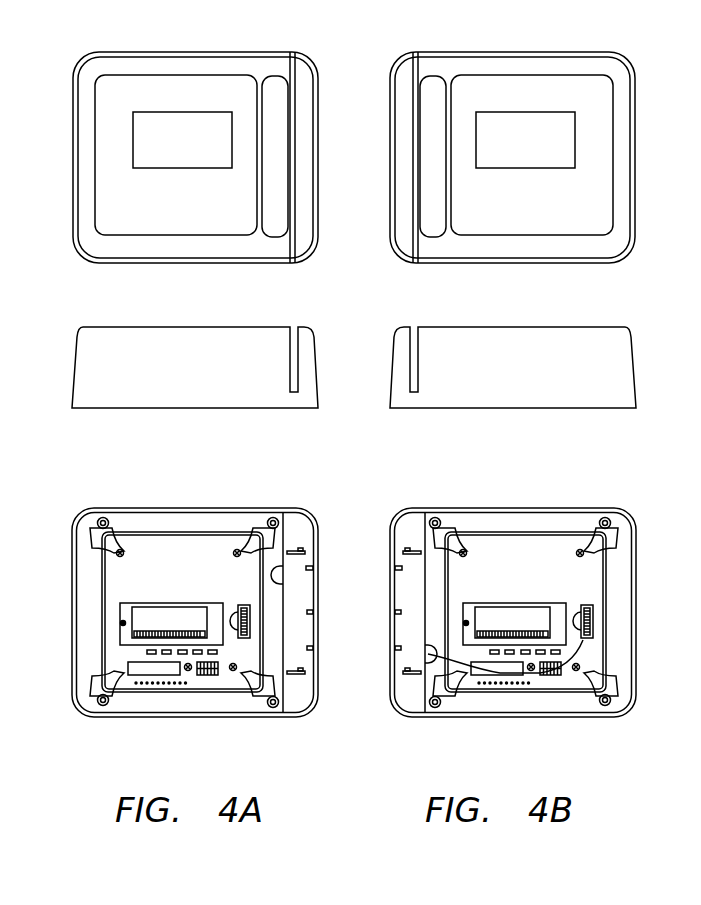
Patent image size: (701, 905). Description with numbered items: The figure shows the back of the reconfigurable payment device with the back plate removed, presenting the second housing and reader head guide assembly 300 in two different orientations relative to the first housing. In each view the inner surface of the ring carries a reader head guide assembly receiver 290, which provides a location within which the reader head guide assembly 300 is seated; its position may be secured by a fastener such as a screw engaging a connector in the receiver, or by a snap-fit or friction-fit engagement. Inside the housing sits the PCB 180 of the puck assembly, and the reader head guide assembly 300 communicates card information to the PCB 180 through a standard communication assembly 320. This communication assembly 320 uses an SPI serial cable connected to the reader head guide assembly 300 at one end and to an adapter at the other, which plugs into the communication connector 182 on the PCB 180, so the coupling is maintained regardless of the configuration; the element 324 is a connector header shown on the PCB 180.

In FIG. 4A, the PCB 180 is at (167, 572).
In FIG. 4B, the PCB 180 is at (527, 562).
In FIG. 4A, the communication connector 182 is at (227, 685).
In FIG. 4B, the communication connector 182 is at (597, 617).
In FIG. 4A, the reader head guide assembly receiver 290 is at (303, 517).
In FIG. 4B, the reader head guide assembly receiver 290 is at (407, 518).
In FIG. 4A, the reader head guide assembly 300 is at (300, 601).
In FIG. 4B, the reader head guide assembly 300 is at (400, 589).
In FIG. 4A, the communication assembly 320 is at (279, 575).
In FIG. 4B, the communication assembly 320 is at (428, 654).
In FIG. 4A, the connector header 324 is at (240, 600).
In FIG. 4B, the connector header 324 is at (583, 640).